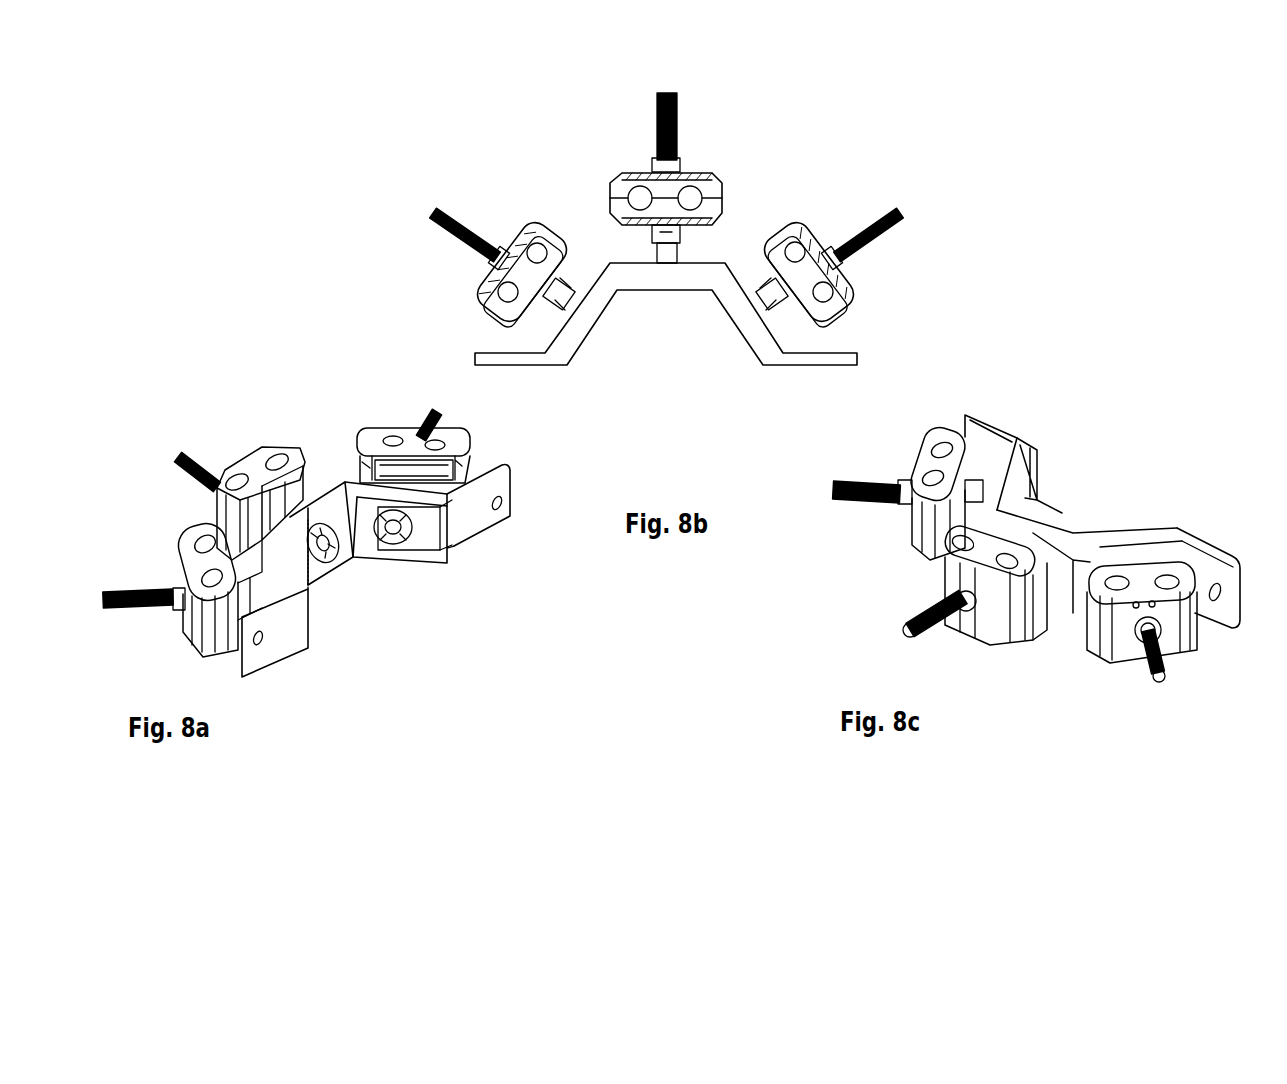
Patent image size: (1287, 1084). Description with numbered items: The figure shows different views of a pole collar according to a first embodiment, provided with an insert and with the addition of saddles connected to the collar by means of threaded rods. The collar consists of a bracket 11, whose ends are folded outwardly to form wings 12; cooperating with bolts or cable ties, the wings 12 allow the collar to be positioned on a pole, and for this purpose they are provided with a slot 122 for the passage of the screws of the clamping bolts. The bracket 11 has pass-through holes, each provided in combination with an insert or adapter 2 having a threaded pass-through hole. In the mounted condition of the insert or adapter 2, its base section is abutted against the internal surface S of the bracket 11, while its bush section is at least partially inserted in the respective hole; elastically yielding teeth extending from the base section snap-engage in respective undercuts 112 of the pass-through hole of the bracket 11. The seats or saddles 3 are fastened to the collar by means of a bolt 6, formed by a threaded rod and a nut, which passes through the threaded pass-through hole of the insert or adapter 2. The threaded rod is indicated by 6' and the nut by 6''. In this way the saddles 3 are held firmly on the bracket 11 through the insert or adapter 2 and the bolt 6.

In FIG. 8A, the internal surface S is at (343, 522).
In FIG. 8A, the insert or adapter 2 is at (390, 547).
In FIG. 8A, the seats/saddles 3 is at (246, 470).
In FIG. 8B, the seats/saddles 3 is at (540, 223).
In FIG. 8C, the bolt 6 is at (1166, 714).
In FIG. 8B, the threaded rod 6' is at (871, 177).
In FIG. 8B, the nut 6'' is at (853, 273).
In FIG. 8B, the bracket 11 is at (740, 312).
In FIG. 8C, the bracket 11 is at (1121, 553).
In FIG. 8A, the wings 12 is at (462, 537).
In FIG. 8A, the undercuts 112 is at (263, 643).
In FIG. 8A, the slot 122 is at (503, 505).